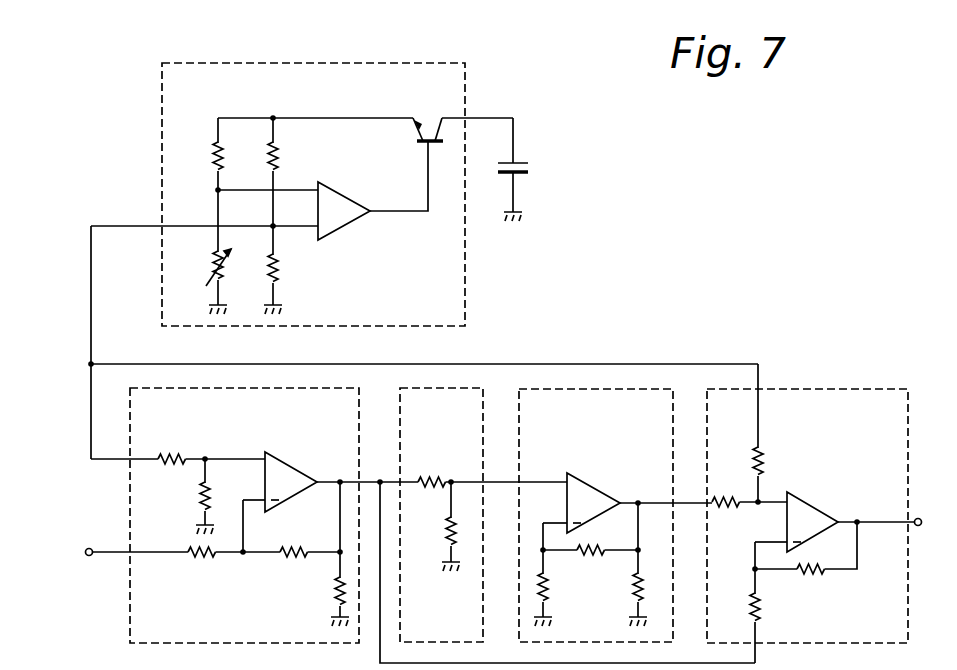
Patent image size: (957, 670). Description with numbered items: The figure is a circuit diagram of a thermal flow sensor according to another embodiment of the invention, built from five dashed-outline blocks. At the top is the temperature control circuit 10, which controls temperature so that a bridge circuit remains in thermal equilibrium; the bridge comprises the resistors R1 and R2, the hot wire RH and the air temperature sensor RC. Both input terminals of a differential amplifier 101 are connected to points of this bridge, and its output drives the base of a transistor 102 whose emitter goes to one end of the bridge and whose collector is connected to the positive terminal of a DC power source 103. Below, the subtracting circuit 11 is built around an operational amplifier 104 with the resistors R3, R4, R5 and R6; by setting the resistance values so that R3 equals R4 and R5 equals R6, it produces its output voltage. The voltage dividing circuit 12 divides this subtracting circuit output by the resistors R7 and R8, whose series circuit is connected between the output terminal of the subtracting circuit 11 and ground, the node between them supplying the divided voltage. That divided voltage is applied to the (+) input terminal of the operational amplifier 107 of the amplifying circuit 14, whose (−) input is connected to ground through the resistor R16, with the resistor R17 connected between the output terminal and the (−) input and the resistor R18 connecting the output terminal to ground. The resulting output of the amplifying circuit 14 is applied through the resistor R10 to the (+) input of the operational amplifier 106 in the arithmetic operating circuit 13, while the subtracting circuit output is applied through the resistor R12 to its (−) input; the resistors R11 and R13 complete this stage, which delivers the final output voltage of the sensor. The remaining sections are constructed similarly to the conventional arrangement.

The temperature control circuit 10 is at (465, 63).
The subtracting circuit 11 is at (130, 615).
The voltage dividing circuit 12 is at (425, 385).
The arithmetic operating circuit 13 is at (837, 387).
The amplifying circuit 14 is at (610, 386).
The differential amplifier 101 is at (352, 226).
The transistor 102 is at (412, 138).
The DC power source 103 is at (522, 160).
The operational amplifier 104 is at (300, 497).
The operational amplifier 106 is at (823, 530).
The operational amplifier 107 is at (617, 481).
The air temperature sensor RC is at (213, 150).
The hot wire RH is at (279, 156).
The resistor R1 is at (213, 267).
The resistor R2 is at (280, 268).
The resistor R3 is at (175, 463).
The resistor R4 is at (202, 498).
The resistor R5 is at (205, 561).
The resistor R6 is at (297, 560).
The resistor R7 is at (431, 488).
The resistor R8 is at (447, 533).
The resistor R10 is at (730, 510).
The resistor R11 is at (751, 462).
The resistor R12 is at (762, 600).
The resistor R13 is at (814, 569).
The resistor R16 is at (549, 583).
The resistor R17 is at (592, 556).
The resistor R18 is at (632, 590).